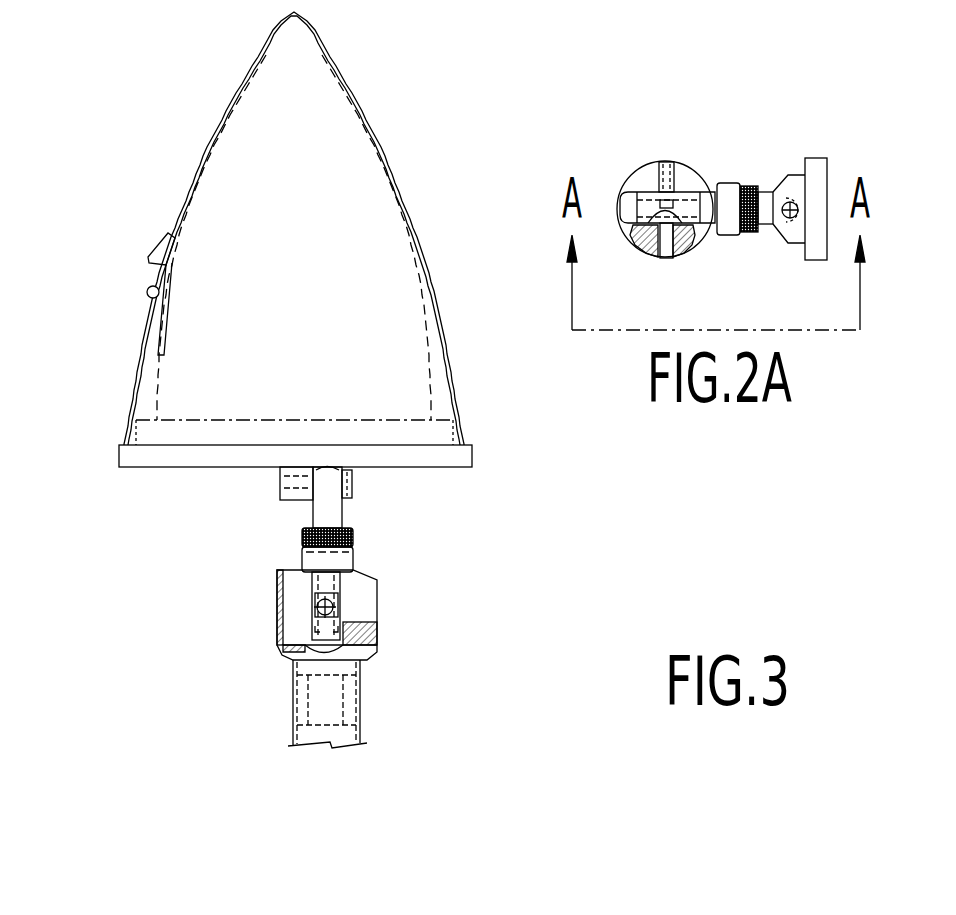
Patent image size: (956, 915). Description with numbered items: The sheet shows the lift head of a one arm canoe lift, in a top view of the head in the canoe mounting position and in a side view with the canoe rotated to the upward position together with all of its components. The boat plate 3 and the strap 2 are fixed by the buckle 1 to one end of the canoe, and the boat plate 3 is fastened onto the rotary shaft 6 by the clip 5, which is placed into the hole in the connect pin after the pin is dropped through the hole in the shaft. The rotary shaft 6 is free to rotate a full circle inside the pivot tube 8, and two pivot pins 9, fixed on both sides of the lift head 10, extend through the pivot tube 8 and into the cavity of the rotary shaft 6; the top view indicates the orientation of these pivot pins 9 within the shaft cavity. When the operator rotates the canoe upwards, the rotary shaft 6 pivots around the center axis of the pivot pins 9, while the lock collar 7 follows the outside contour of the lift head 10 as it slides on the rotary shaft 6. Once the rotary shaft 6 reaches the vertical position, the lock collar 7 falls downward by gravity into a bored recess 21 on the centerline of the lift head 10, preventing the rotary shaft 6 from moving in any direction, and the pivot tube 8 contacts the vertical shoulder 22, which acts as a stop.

In FIG. 3, the buckle 1 is at (142, 243).
In FIG. 3, the strap 2 is at (460, 366).
In FIG. 3, the boat plate 3 is at (164, 476).
In FIG. 2A, the boat plate 3 is at (822, 144).
In FIG. 3, the clip 5 is at (369, 508).
In FIG. 3, the rotary shaft 6 is at (290, 516).
In FIG. 3, the lock collar 7 is at (364, 551).
In FIG. 2A, the lock collar 7 is at (743, 170).
In FIG. 3, the pivot tube 8 is at (355, 607).
In FIG. 2A, the pivot tube 8 is at (628, 178).
In FIG. 2A, the pivot pins 9 is at (667, 272).
In FIG. 3, the lift head 10 is at (262, 636).
In FIG. 3, the bored recess 21 is at (285, 566).
In FIG. 2A, the bored recess 21 is at (684, 169).
In FIG. 3, the vertical shoulder 22 is at (377, 652).